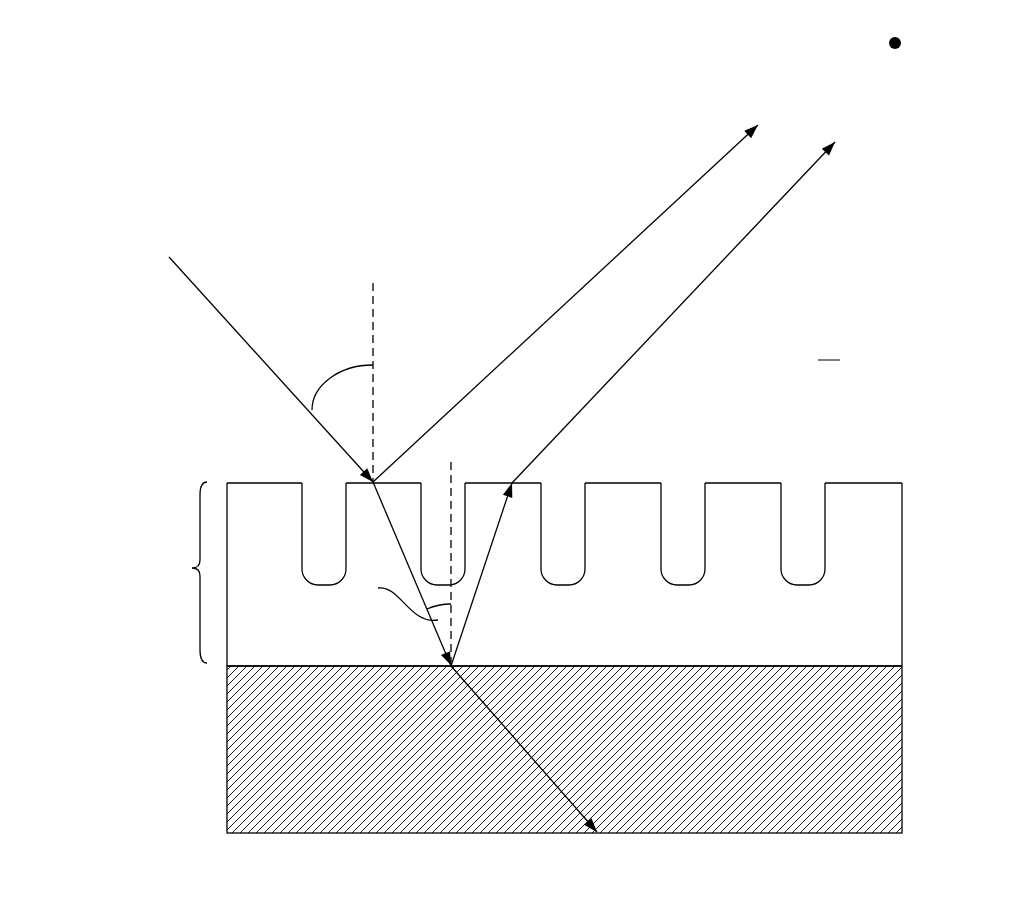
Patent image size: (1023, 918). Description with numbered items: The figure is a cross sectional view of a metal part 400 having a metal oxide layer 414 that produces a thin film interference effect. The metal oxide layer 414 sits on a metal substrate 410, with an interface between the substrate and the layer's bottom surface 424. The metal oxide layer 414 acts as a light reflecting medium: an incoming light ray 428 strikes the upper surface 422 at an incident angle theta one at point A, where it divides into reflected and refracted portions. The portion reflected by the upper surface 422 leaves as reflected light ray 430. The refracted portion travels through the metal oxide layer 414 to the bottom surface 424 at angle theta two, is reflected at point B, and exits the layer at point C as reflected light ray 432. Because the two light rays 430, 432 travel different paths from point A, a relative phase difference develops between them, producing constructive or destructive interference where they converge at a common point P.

The metal part 400 is at (410, 153).
The metal substrate 410 is at (902, 793).
The metal oxide layer 414 is at (902, 545).
The upper surface 422 is at (902, 483).
The bottom surface 424 is at (902, 667).
The incoming light ray 428 is at (280, 378).
The reflected light ray 430 is at (575, 295).
The reflected light ray 432 is at (768, 215).